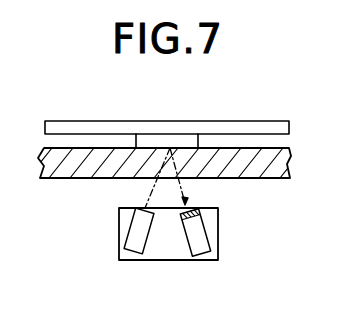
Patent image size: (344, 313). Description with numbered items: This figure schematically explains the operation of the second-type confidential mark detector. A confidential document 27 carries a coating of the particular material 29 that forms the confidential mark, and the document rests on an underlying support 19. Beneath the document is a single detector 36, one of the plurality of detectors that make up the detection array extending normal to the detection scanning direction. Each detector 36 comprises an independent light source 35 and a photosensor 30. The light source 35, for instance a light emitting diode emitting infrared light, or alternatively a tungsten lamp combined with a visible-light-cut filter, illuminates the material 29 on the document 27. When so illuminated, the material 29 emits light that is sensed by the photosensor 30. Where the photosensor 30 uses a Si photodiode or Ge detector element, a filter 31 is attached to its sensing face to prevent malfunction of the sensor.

The support plate 19 is at (242, 155).
The confidential document 27 is at (98, 124).
The particular material 29 is at (160, 142).
The photosensor 30 is at (200, 236).
The infrared-cut filter 31 is at (197, 210).
The light source 35 is at (133, 246).
The detector 36 is at (192, 256).